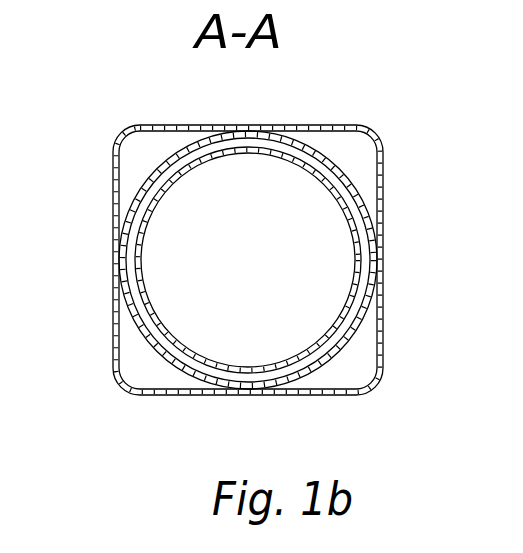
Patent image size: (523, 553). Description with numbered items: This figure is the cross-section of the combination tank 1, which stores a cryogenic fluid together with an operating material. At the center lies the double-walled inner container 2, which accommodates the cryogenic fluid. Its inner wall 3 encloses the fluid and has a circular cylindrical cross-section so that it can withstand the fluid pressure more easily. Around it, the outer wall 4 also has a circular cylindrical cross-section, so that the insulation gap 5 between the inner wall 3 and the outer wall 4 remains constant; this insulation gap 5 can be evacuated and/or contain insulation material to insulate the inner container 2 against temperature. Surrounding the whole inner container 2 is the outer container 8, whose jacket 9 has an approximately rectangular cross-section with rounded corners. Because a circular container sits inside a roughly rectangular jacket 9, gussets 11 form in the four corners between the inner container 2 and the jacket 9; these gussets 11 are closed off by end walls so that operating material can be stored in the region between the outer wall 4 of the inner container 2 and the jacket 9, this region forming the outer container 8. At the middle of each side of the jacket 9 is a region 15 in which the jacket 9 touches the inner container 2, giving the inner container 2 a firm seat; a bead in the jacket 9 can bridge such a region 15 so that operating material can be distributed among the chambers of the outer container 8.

The combination tank 1 is at (103, 85).
The inner container 2 is at (258, 277).
The inner wall 3 is at (155, 195).
The outer wall 4 is at (200, 143).
The insulation gap 5 is at (312, 158).
The outer container 8 is at (362, 165).
The jacket 9 is at (380, 310).
The gussets 11 is at (143, 152).
The region 15 is at (260, 116).